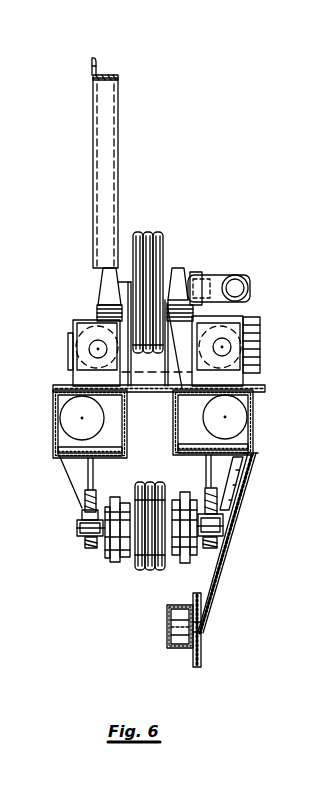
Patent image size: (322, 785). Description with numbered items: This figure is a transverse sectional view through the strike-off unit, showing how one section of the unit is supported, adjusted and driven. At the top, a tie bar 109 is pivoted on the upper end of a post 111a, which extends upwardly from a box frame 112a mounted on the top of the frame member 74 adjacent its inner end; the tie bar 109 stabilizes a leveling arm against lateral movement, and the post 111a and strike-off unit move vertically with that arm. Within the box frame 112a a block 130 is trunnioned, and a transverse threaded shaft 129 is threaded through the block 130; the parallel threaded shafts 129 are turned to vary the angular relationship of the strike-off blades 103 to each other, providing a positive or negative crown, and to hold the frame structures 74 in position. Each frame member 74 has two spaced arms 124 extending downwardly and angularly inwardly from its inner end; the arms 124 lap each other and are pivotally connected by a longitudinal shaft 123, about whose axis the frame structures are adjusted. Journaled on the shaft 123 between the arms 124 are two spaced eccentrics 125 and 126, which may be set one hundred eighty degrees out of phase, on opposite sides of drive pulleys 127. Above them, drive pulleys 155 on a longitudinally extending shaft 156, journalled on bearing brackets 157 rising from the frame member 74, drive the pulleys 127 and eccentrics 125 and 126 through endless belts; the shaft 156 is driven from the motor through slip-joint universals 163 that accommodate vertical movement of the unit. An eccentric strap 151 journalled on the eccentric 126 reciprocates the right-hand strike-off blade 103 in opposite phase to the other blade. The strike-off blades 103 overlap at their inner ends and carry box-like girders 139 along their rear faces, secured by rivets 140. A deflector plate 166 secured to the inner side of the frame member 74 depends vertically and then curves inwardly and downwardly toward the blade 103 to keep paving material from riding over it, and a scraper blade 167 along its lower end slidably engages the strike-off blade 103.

The frame member 74 is at (60, 442).
The strike-off blade 103 is at (203, 662).
The tie bar 109 is at (98, 63).
The post 111a is at (117, 131).
The box frame 112a is at (75, 385).
The longitudinal shaft 123 is at (80, 530).
The arm 124 is at (245, 555).
The eccentric 125 is at (118, 563).
The eccentric 126 is at (183, 492).
The drive pulley 127 is at (157, 571).
The threaded shaft 129 is at (90, 350).
The block 130 is at (92, 338).
The box-like girder 139 is at (167, 646).
The rivet 140 is at (201, 623).
The eccentric strap 151 is at (190, 567).
The drive pulley 155 is at (136, 232).
The shaft 156 is at (128, 278).
The bearing bracket 157 is at (95, 275).
The universal 163 is at (219, 274).
The deflector plate 166 is at (226, 532).
The scraper blade 167 is at (201, 632).